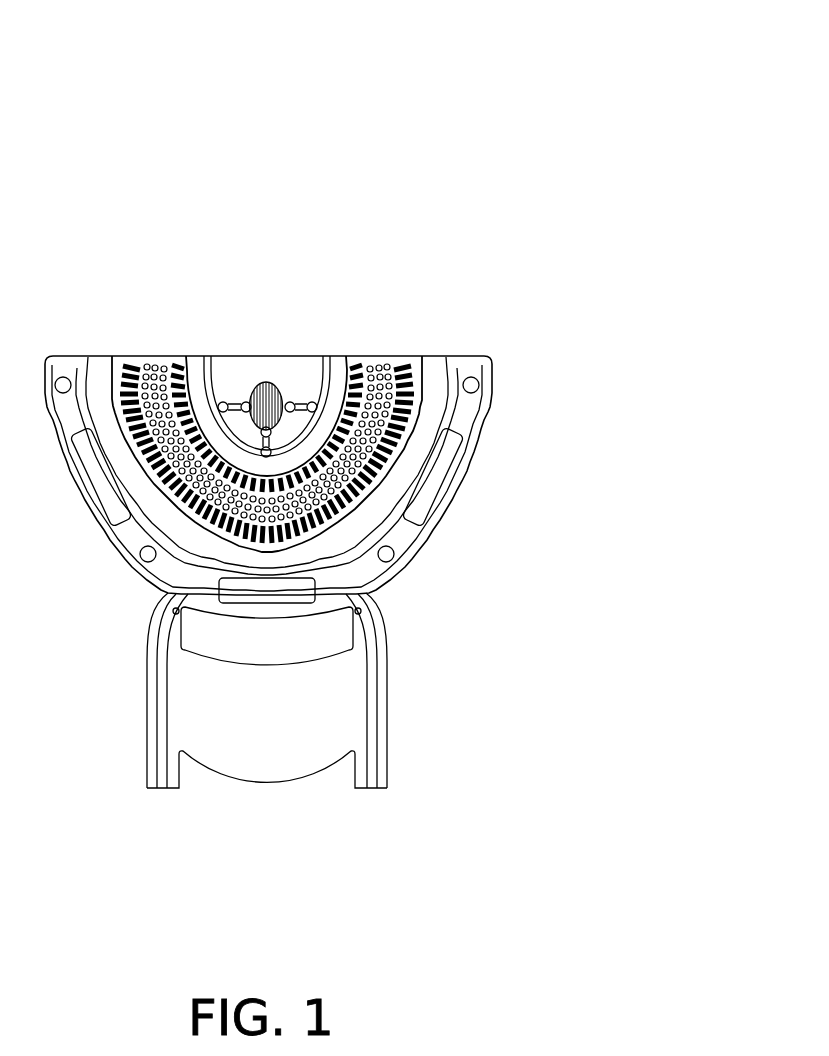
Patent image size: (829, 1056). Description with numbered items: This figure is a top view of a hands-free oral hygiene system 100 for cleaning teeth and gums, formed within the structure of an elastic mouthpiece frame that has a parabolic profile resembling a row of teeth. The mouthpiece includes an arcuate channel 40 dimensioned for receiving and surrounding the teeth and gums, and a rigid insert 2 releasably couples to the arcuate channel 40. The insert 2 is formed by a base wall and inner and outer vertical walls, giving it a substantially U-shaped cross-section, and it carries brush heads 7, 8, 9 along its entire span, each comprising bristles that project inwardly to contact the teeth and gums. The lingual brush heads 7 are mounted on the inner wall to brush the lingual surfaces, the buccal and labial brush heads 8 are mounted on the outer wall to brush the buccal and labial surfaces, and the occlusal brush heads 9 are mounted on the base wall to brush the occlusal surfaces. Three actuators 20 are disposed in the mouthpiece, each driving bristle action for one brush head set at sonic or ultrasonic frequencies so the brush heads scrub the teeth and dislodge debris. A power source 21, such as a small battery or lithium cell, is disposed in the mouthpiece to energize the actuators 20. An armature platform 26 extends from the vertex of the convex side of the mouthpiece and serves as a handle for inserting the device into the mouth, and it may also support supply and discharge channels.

The oral hygiene system 100 is at (381, 144).
The arcuate channel 40 is at (146, 338).
The lingual brush heads 7 is at (122, 368).
The buccal and labial brush heads 8 is at (177, 368).
The occlusal brush heads 9 is at (382, 382).
The insert 2 is at (343, 355).
The actuator 20 is at (443, 487).
The power source 21 is at (388, 557).
The armature platform 26 is at (268, 783).